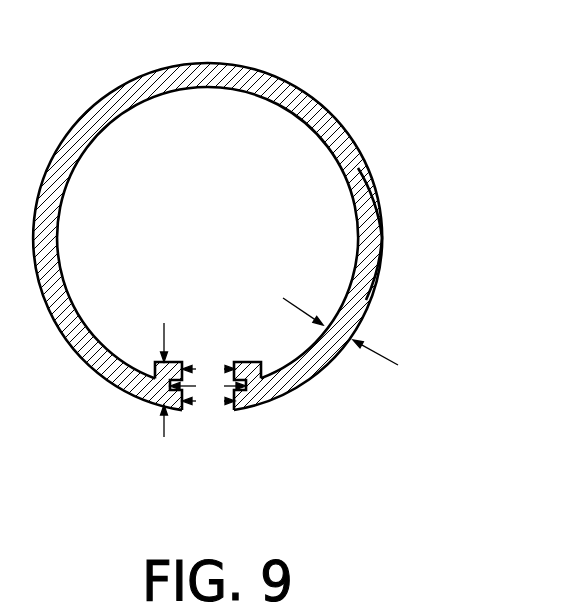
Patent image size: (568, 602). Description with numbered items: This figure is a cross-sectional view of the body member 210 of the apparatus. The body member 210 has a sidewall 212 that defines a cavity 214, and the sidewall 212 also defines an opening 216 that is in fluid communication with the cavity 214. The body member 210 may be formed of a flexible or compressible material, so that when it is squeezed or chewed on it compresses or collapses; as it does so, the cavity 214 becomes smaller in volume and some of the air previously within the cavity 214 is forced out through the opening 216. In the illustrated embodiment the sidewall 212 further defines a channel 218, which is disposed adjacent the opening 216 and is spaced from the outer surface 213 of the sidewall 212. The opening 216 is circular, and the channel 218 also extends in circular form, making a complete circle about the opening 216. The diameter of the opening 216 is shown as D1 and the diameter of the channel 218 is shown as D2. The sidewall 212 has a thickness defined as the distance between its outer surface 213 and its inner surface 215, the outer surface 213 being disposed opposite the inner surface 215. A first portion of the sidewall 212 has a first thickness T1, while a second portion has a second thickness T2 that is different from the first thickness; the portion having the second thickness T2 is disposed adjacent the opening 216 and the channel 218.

The body member 210 is at (222, 63).
The sidewall 212 is at (310, 93).
The outer surface 213 is at (378, 277).
The cavity 214 is at (312, 173).
The inner surface 215 is at (380, 231).
The opening 216 is at (217, 422).
The channel 218 is at (260, 400).
The first thickness T1 is at (354, 339).
The second thickness T2 is at (162, 394).
The diameter of the opening D1 is at (208, 385).
The diameter of the channel D2 is at (208, 386).